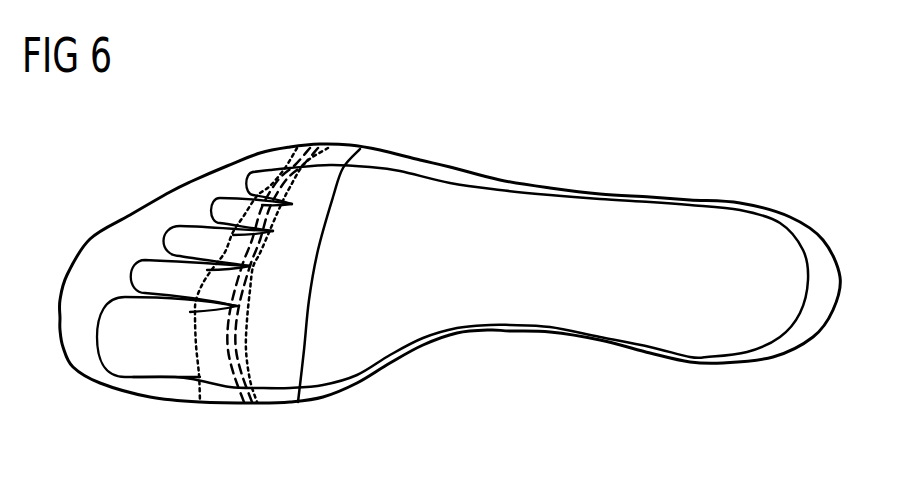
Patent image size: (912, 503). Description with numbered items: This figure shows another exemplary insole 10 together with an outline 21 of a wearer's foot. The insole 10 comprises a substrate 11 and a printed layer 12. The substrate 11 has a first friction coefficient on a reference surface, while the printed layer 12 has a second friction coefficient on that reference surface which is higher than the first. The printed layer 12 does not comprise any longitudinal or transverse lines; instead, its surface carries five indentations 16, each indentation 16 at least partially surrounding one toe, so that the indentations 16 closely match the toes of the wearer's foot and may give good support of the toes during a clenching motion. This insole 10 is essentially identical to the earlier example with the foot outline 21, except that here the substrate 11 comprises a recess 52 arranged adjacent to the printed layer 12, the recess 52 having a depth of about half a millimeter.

The insole 10 is at (101, 177).
The substrate 11 is at (83, 293).
The printed layer 12 is at (213, 393).
The indentation 16 is at (255, 215).
The outline 21 is at (97, 352).
The recess 52 is at (273, 378).